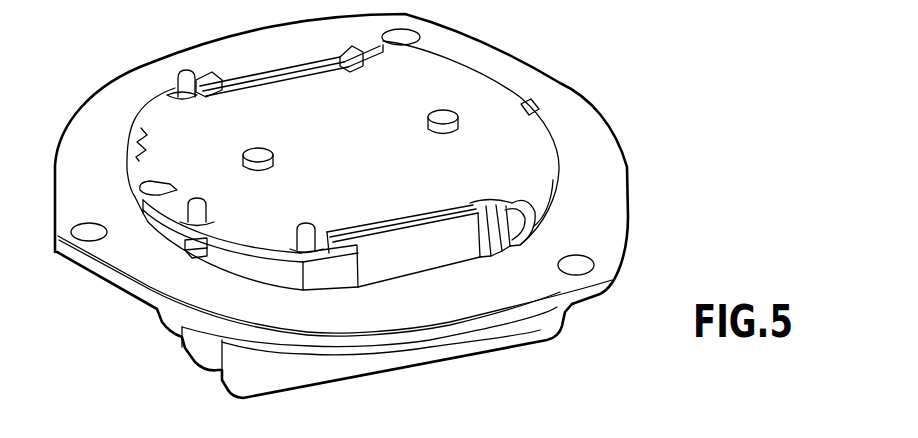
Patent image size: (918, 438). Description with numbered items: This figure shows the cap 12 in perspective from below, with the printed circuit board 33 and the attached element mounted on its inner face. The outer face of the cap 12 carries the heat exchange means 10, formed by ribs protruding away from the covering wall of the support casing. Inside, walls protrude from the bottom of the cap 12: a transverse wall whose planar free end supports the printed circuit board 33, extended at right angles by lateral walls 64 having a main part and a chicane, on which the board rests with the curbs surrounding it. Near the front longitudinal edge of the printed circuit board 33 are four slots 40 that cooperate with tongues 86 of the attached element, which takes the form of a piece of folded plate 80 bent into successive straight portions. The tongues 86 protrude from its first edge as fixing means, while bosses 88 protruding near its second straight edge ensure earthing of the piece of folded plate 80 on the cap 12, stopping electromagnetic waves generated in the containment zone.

The heat exchange means 10 is at (337, 371).
The cap 12 is at (603, 104).
The printed circuit board 33 is at (388, 127).
The slots 40 is at (175, 79).
The lateral walls 64 is at (387, 243).
The piece of folded plate 80 is at (145, 215).
The tongues 86 is at (187, 73).
The bosses 88 is at (177, 243).